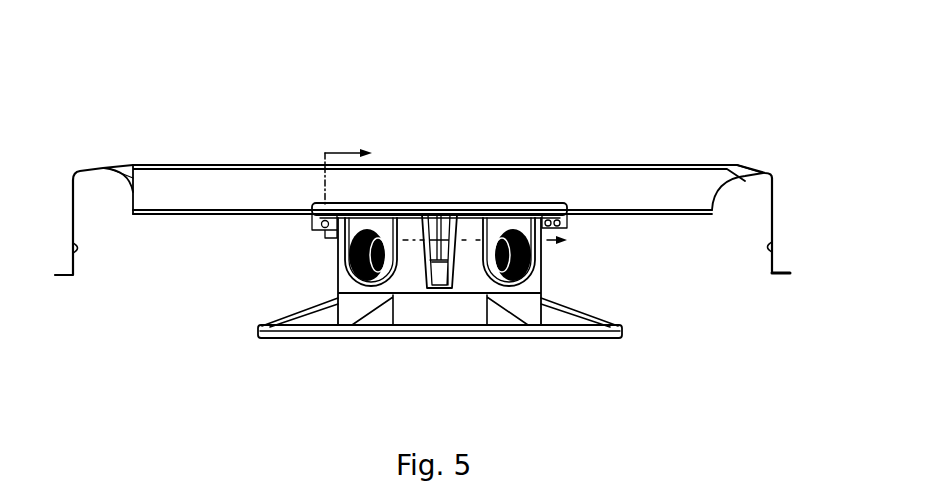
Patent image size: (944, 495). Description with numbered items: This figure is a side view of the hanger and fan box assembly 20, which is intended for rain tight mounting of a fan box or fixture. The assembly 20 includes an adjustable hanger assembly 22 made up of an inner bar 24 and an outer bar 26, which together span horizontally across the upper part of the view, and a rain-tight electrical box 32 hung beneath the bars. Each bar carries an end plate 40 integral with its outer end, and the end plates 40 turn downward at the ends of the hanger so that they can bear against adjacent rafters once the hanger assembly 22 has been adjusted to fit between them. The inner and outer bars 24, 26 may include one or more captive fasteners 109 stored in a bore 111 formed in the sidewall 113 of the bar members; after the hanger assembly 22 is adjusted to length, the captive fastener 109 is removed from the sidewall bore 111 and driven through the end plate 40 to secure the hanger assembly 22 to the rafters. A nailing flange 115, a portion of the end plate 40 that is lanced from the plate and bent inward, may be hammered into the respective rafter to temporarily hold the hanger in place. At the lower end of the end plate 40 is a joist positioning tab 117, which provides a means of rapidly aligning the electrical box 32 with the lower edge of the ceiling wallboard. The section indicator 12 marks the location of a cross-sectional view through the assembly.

The hanger and fan box assembly 20 is at (186, 78).
The hanger assembly 22 is at (440, 164).
The inner bar 24 is at (123, 165).
The outer bar 26 is at (622, 164).
The captive fastener 109 is at (702, 185).
The end plate 40 is at (773, 200).
The sidewall 113 is at (240, 203).
The bore 111 is at (131, 191).
The nailing flange 115 is at (765, 248).
The joist positioning tab 117 is at (780, 277).
The rain-tight electrical box 32 is at (542, 271).
The section line 12 is at (438, 199).